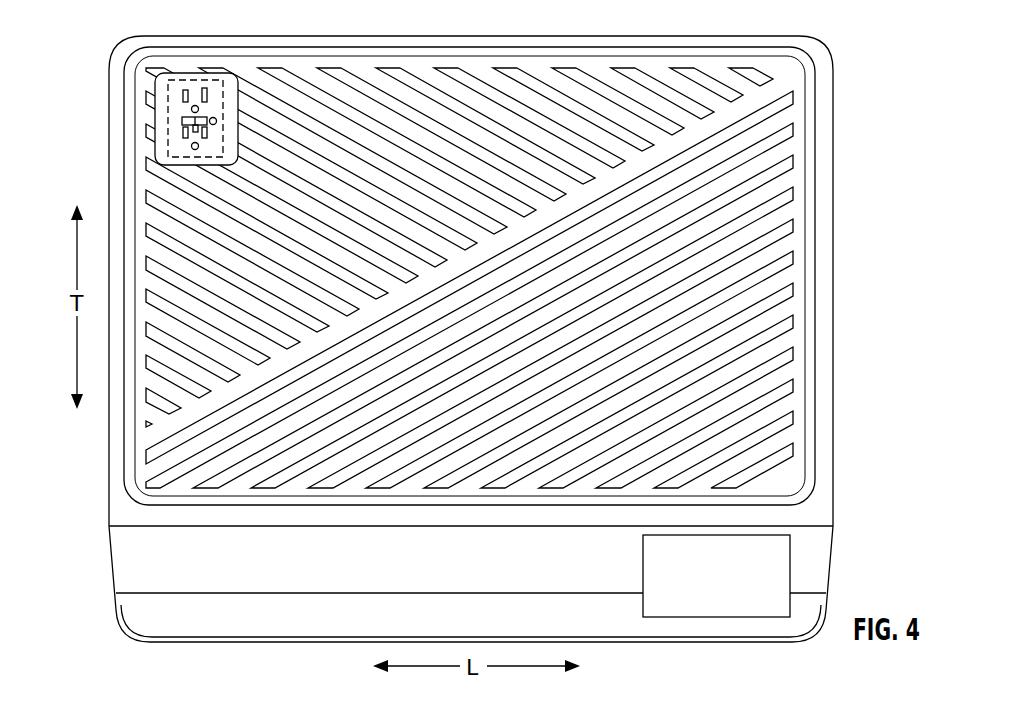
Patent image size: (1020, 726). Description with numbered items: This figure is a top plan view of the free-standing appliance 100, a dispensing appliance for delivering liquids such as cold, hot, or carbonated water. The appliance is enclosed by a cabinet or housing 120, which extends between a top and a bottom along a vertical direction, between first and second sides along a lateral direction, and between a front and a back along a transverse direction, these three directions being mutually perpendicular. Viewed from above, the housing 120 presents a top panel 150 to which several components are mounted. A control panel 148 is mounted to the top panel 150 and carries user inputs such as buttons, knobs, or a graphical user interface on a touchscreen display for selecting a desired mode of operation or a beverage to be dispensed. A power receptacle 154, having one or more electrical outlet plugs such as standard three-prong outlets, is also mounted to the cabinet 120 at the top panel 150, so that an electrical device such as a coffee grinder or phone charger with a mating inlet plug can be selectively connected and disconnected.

The free-standing appliance 100 is at (888, 300).
The cabinet or housing 120 is at (833, 183).
The control panel 148 is at (778, 578).
The top panel 150 is at (138, 563).
The power receptacle 154 is at (153, 124).